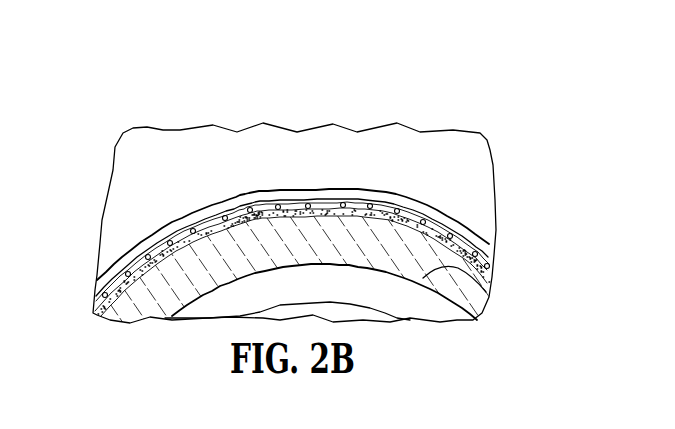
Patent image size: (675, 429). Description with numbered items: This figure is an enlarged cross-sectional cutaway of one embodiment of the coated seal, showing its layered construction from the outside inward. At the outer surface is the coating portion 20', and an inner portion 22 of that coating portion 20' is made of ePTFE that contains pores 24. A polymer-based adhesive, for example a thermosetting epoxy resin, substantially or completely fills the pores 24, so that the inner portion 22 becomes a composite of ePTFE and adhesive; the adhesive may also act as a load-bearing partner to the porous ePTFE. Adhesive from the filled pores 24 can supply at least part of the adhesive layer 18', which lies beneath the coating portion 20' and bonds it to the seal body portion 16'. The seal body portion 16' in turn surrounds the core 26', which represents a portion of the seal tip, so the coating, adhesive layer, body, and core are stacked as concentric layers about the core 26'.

The coating portion 20' is at (315, 229).
The inner portion 22 is at (410, 217).
The pores 24 is at (308, 203).
The adhesive layer 18' is at (292, 250).
The seal body portion 16' is at (483, 285).
The core 26' is at (321, 327).